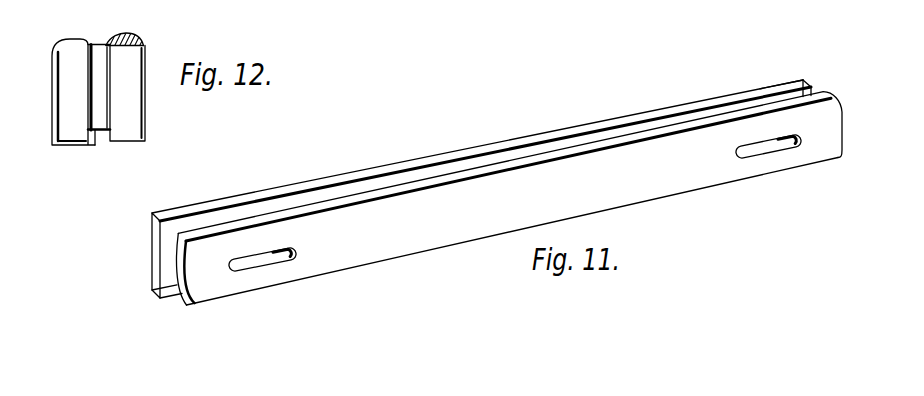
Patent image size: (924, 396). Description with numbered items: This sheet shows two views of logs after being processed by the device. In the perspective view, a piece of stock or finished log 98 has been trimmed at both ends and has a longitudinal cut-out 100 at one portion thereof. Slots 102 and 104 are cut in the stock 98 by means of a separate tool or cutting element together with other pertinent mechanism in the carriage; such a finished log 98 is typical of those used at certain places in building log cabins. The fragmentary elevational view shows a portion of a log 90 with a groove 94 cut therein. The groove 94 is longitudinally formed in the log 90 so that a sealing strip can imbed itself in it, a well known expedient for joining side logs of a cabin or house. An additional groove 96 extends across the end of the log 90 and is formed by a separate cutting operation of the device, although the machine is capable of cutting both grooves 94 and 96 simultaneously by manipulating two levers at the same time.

In FIG. 12, the log 90 is at (142, 73).
In FIG. 12, the groove 94 is at (100, 76).
In FIG. 12, the groove 96 is at (93, 135).
In FIG. 11, the finished log 98 is at (492, 148).
In FIG. 11, the longitudinal cut-out 100 is at (777, 98).
In FIG. 11, the slot 102 is at (780, 148).
In FIG. 11, the slot 104 is at (273, 257).